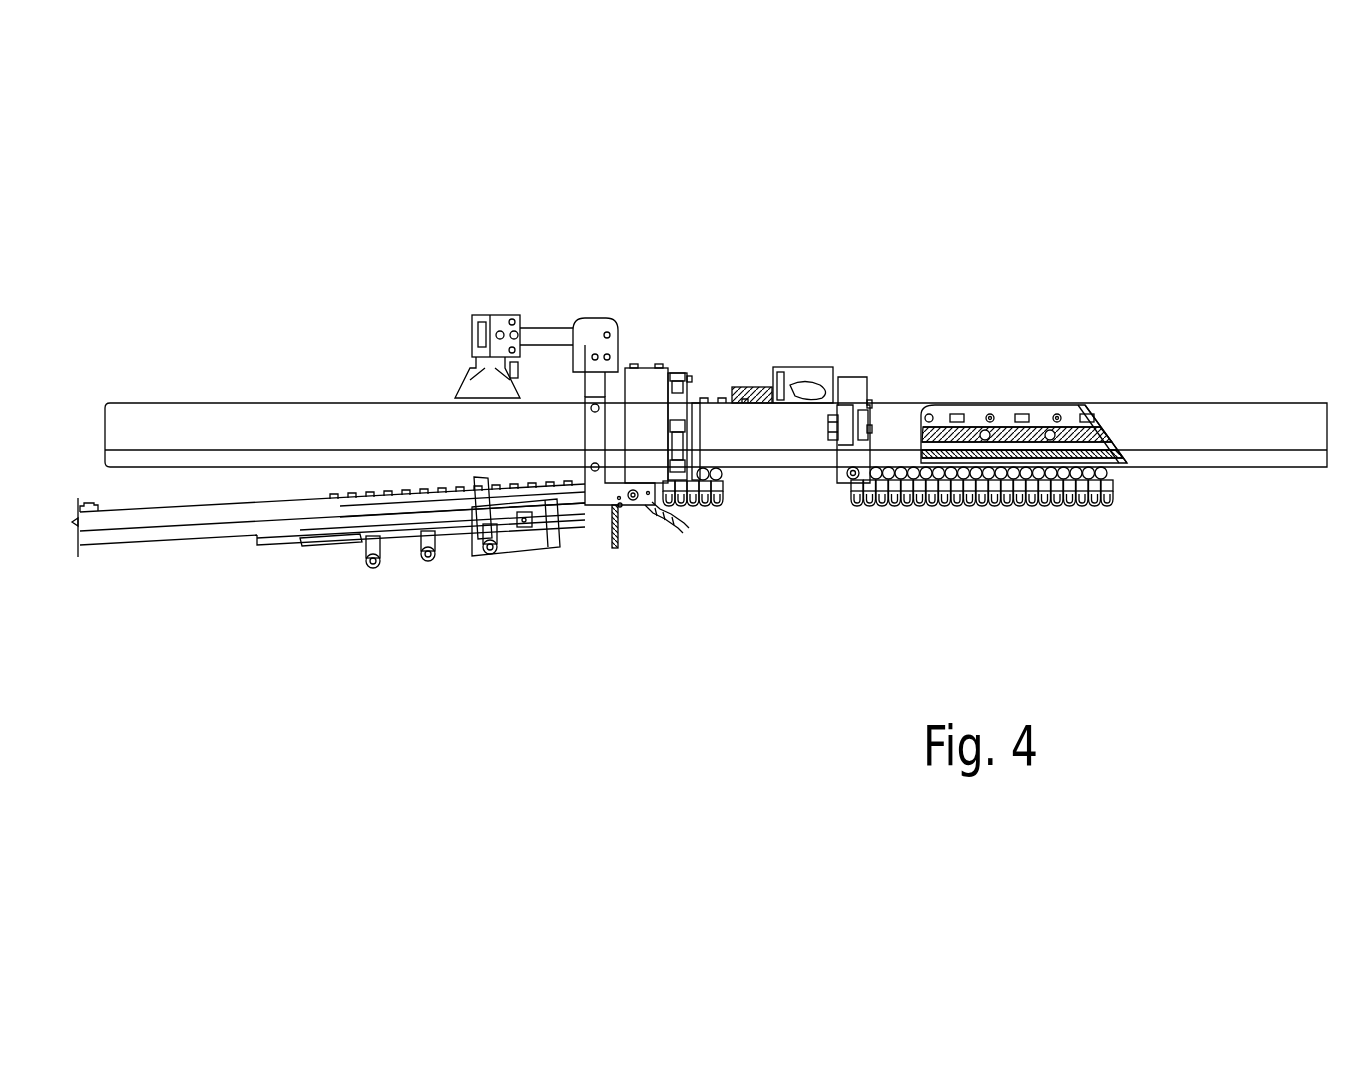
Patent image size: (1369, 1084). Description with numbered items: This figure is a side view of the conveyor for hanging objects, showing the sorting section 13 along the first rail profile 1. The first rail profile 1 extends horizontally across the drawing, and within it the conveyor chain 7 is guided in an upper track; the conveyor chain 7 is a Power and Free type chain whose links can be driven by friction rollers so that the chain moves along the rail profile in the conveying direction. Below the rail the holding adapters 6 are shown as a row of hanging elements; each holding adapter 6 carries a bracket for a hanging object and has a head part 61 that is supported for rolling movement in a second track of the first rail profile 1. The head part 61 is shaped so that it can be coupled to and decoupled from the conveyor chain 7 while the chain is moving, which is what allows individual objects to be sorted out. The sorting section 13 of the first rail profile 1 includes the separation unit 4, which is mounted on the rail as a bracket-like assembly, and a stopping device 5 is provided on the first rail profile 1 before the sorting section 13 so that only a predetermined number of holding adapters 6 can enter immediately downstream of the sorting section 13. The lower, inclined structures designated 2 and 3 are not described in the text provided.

The first rail profile 1 is at (214, 423).
The conveyor frame 2 is at (272, 535).
The conveyor rail 3 is at (166, 535).
The separation unit 4 is at (648, 330).
The stopping device 5 is at (856, 357).
The holding adapter 6 is at (1130, 503).
The conveyor chain 7 is at (1010, 400).
The head part 61 is at (1110, 435).
The sorting section 13 is at (648, 533).